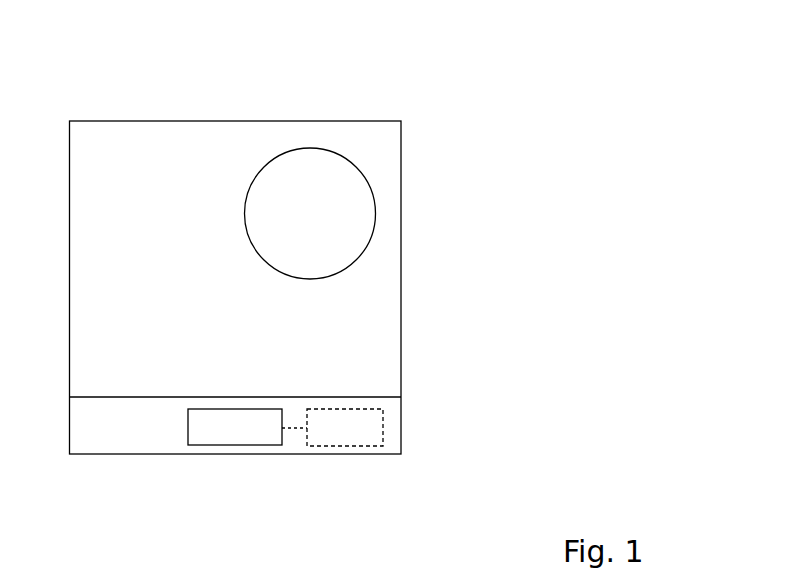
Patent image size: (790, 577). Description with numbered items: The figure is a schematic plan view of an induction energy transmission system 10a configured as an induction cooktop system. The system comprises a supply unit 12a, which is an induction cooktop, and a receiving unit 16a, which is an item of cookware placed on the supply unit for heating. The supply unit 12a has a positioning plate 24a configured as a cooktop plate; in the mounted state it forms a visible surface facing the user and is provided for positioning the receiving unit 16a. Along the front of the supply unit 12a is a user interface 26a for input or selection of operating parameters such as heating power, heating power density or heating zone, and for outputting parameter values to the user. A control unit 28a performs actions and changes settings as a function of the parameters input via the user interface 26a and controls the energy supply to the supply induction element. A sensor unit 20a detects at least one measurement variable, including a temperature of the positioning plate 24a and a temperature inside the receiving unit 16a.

The induction energy transmission system 10a is at (490, 130).
The supply unit 12a is at (402, 291).
The receiving unit 16a is at (297, 148).
The positioning plate 24a is at (354, 349).
The user interface 26a is at (237, 446).
The sensor unit 20a is at (352, 447).
The control unit 28a is at (345, 427).